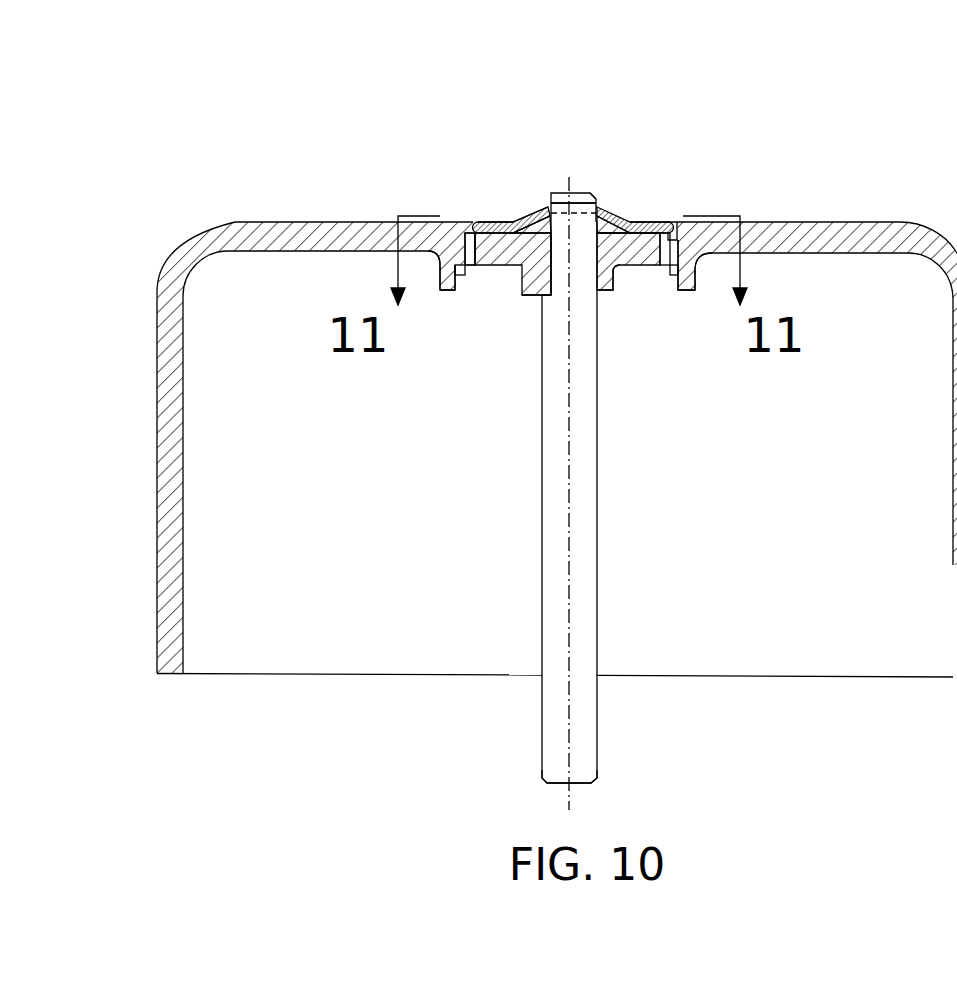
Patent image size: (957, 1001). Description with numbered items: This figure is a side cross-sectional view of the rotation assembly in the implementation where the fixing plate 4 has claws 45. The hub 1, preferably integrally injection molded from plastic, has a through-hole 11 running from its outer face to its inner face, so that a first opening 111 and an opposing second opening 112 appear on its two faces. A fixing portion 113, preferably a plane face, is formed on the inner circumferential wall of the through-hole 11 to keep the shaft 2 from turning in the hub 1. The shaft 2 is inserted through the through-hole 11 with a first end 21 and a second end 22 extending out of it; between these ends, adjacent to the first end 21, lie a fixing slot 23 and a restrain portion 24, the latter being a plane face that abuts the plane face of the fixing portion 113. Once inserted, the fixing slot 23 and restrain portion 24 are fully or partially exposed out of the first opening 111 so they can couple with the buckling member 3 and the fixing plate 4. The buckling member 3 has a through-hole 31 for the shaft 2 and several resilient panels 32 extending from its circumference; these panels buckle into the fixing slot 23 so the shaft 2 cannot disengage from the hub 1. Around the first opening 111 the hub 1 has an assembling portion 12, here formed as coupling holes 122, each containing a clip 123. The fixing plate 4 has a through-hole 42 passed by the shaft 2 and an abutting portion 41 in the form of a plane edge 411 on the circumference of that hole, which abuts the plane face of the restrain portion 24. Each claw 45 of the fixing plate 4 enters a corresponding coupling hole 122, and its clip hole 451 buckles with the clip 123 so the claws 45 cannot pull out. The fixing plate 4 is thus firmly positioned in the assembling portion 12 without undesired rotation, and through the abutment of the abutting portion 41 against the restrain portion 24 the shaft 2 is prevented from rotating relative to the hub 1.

The hub 1 is at (865, 238).
The through-hole 11 is at (583, 290).
The first opening 111 is at (607, 213).
The second opening 112 is at (600, 292).
The fixing portion 113 is at (548, 273).
The assembling portion 12 is at (686, 212).
The coupling hole 122 is at (462, 256).
The clip 123 is at (445, 248).
The shaft 2 is at (590, 580).
The first end 21 is at (583, 178).
The second end 22 is at (607, 784).
The fixing slot 23 is at (592, 196).
The restrain portion 24 is at (522, 266).
The buckling member 3 is at (630, 222).
The through-hole 31 is at (530, 215).
The resilient panels 32 is at (487, 222).
The fixing plate 4 is at (465, 228).
The abutting portion 41 is at (505, 224).
The plane edge 411 is at (568, 191).
The through-hole 42 is at (598, 200).
The claws 45 is at (462, 274).
The clip hole 451 is at (463, 267).